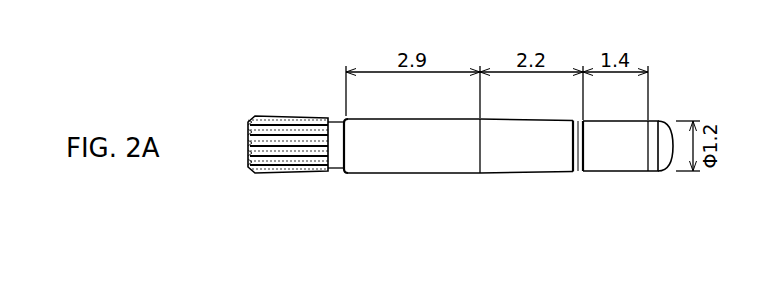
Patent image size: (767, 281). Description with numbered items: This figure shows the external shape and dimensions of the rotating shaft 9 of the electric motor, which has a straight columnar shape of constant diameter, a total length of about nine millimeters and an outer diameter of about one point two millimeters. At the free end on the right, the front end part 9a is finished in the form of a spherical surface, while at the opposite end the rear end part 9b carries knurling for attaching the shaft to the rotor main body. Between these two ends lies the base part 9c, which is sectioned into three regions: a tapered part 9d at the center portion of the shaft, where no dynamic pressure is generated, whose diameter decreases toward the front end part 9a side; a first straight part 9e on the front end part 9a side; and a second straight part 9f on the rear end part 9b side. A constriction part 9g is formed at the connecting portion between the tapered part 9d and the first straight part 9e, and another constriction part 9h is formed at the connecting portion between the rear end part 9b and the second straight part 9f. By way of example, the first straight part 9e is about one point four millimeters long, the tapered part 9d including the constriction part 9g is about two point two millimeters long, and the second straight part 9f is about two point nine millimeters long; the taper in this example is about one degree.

The rotating shaft 9 is at (672, 118).
The front end part 9a is at (676, 158).
The rear end part 9b is at (240, 153).
The base part 9c is at (648, 213).
The tapered part 9d is at (522, 157).
The first straight part 9e is at (615, 157).
The second straight part 9f is at (408, 155).
The constriction part 9g is at (576, 173).
The constriction part 9h is at (337, 157).